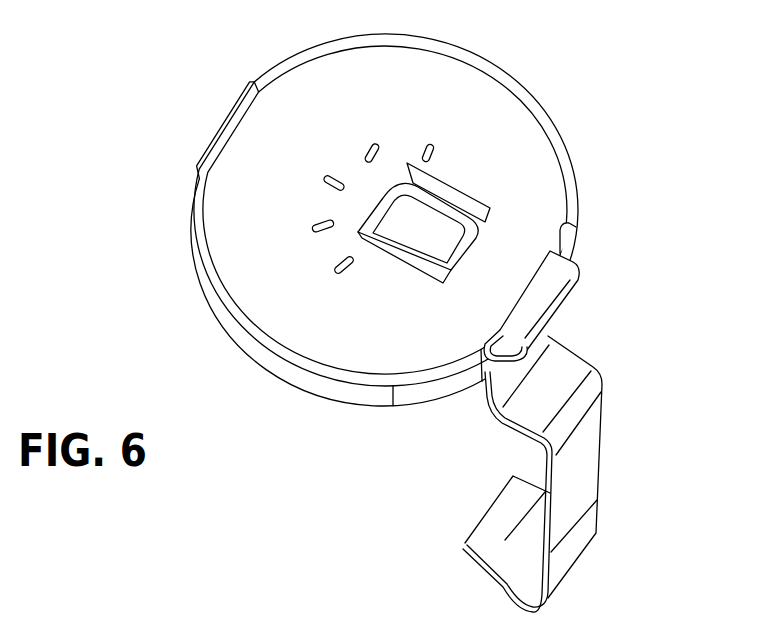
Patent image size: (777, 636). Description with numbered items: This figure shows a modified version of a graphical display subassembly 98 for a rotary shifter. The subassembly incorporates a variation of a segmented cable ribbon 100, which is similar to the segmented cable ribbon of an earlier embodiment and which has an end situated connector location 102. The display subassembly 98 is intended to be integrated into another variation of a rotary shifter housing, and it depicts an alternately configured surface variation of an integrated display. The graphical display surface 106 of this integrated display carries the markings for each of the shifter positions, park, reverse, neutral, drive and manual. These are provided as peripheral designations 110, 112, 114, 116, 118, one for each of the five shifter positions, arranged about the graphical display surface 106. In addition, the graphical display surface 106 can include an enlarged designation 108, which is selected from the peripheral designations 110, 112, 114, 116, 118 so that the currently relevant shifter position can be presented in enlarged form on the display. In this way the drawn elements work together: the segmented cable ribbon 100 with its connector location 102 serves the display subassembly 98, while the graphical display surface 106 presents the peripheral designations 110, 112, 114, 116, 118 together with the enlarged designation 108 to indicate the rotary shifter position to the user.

The graphical display subassembly 98 is at (331, 414).
The segmented cable ribbon 100 is at (583, 457).
The connector location 102 is at (490, 503).
The graphical display surface 106 is at (218, 220).
The enlarged designation 108 is at (473, 197).
The peripheral designation 110 is at (295, 292).
The peripheral designation 112 is at (253, 233).
The peripheral designation 114 is at (280, 162).
The peripheral designation 116 is at (337, 108).
The peripheral designation 118 is at (448, 110).